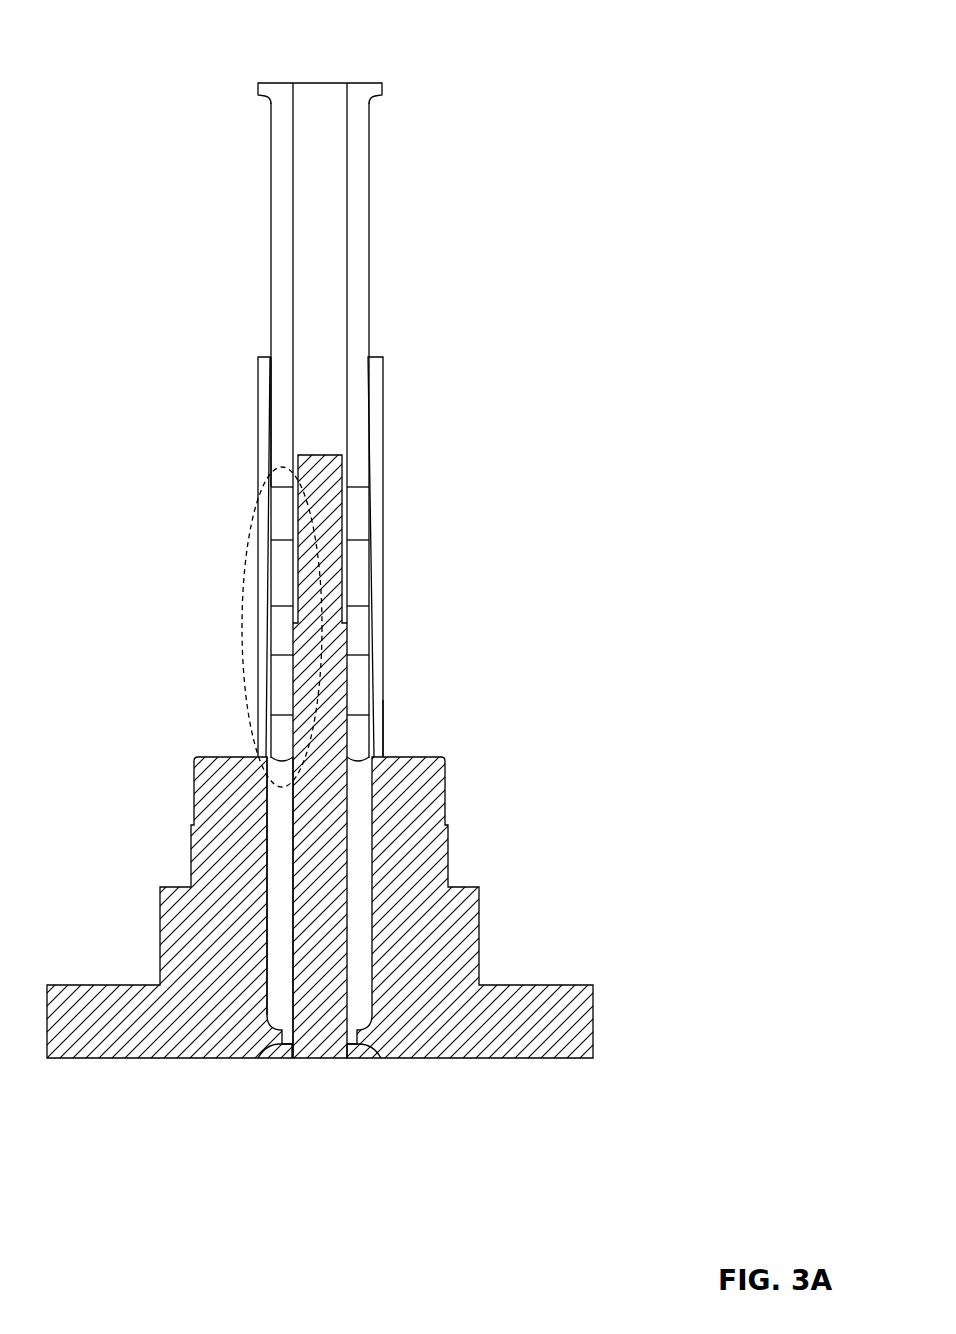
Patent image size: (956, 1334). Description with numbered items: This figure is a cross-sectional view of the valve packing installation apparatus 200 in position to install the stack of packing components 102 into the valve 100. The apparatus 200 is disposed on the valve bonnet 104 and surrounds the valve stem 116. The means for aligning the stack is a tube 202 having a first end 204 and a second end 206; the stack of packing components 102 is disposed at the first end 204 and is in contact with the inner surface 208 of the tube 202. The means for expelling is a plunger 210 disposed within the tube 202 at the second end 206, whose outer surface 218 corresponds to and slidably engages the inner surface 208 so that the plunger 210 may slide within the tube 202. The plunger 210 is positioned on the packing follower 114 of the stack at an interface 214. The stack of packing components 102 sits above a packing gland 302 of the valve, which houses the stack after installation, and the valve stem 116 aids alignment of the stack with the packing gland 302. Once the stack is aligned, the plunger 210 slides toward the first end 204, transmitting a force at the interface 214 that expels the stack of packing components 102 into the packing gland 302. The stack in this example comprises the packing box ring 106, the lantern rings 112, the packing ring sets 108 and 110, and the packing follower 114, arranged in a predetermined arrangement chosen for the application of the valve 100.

The valve 100 is at (189, 739).
The stack of packing components 102 is at (241, 622).
The valve bonnet 104 is at (425, 895).
The packing box ring 106 is at (376, 720).
The packing ring set 108 is at (357, 685).
The packing ring set 110 is at (356, 590).
The lantern rings 112 is at (357, 628).
The packing follower 114 is at (358, 503).
The valve stem 116 is at (320, 573).
The valve packing installation apparatus 200 is at (402, 42).
The tube 202 is at (266, 438).
The first end 204 is at (380, 755).
The second end 206 is at (263, 358).
The inner surface 208 is at (372, 460).
The plunger 210 is at (358, 270).
The interface 214 is at (281, 488).
The outer surface 218 is at (271, 157).
The packing gland 302 is at (283, 845).